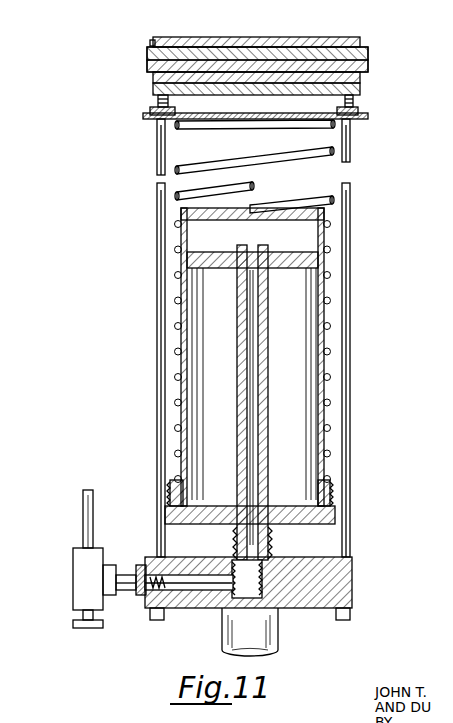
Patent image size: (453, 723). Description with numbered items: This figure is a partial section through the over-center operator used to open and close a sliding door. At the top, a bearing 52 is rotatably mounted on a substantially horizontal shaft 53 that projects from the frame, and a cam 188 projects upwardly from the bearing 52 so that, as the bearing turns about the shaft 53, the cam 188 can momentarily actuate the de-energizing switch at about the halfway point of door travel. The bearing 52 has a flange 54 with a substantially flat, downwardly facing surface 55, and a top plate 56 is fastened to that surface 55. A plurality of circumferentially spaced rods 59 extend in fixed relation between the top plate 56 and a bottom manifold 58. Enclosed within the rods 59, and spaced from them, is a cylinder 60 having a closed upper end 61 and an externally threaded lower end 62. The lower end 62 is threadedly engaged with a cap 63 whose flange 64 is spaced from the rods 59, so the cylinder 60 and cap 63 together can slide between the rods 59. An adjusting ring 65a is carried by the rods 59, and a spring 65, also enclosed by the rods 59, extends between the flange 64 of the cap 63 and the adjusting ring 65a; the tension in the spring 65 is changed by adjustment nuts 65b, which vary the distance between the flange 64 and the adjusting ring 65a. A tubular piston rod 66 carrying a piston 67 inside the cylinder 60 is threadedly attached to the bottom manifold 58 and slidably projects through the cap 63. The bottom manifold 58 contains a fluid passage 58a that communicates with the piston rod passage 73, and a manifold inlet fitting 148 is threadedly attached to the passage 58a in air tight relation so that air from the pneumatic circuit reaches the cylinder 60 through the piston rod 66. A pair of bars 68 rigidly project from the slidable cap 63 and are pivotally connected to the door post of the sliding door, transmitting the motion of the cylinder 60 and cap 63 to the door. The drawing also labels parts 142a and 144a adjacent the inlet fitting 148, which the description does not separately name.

The cam 188 is at (153, 40).
The bearing 52 is at (153, 42).
The shaft 53 is at (147, 59).
The flange 54 is at (153, 78).
The top plate 56 is at (153, 89).
The downwardly facing surface 55 is at (205, 90).
The adjusting ring 65a is at (362, 121).
The adjustment nuts 65b is at (356, 114).
The spring 65 is at (350, 150).
The rods 59 is at (157, 220).
The closed upper end 61 is at (322, 212).
The cylinder 60 is at (322, 270).
The piston 67 is at (300, 254).
The tubular piston rod 66 is at (268, 382).
The piston rod passage 73 is at (255, 357).
The cap 63 is at (170, 510).
The externally threaded lower end 62 is at (324, 478).
The flange 64 is at (336, 516).
The bottom manifold 58 is at (352, 600).
The fluid passage 58a is at (195, 590).
The bars 68 is at (280, 648).
The manifold inlet fitting 148 is at (125, 592).
The valve 144a is at (75, 561).
The pipe 142a is at (85, 511).